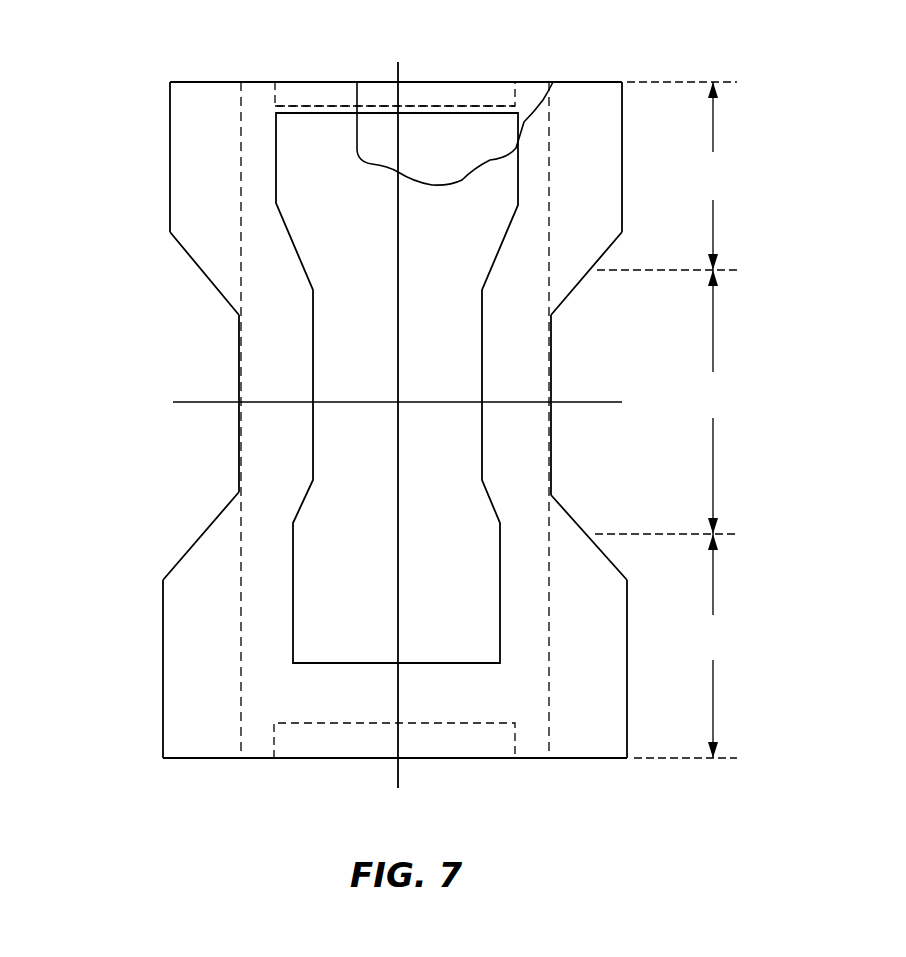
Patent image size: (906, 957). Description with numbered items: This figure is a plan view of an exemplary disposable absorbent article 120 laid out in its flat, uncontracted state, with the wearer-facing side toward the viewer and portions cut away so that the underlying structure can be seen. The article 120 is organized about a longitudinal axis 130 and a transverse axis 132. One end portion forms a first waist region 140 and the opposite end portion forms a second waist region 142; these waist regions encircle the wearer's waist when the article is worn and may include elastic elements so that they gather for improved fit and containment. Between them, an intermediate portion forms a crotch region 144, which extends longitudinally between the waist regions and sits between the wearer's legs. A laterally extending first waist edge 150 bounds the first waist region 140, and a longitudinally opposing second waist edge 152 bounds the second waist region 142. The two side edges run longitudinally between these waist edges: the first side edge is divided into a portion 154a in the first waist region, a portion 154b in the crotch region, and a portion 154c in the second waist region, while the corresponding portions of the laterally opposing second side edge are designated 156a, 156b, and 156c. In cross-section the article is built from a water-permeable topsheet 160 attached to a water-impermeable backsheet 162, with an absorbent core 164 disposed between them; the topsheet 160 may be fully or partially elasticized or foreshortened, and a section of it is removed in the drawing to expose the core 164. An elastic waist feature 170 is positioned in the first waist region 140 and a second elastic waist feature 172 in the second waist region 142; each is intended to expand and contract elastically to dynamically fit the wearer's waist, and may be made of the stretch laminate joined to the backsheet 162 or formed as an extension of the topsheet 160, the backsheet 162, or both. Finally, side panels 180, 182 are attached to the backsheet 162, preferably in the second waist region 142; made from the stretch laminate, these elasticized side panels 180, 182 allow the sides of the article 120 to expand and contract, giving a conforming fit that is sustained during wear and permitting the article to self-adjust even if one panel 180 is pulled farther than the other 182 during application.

The disposable absorbent article 120 is at (132, 146).
The longitudinal axis 130 is at (400, 100).
The transverse axis 132 is at (217, 402).
The first waist region 140 is at (667, 176).
The second waist region 142 is at (685, 646).
The crotch region 144 is at (666, 402).
The first waist edge 150 is at (543, 80).
The second waist edge 152 is at (549, 758).
The first side edge portion in first waist region 154a is at (170, 190).
The first side edge portion in crotch region 154b is at (238, 328).
The first side edge portion in second waist region 154c is at (163, 652).
The second side edge portion in first waist region 156a is at (622, 160).
The second side edge portion in crotch region 156b is at (552, 378).
The second side edge portion in second waist region 156c is at (627, 713).
The topsheet 160 is at (231, 141).
The backsheet 162 is at (483, 104).
The absorbent core 164 is at (463, 154).
The elastic waist feature 170 is at (313, 92).
The elastic waist feature 172 is at (458, 745).
The side panel 180 is at (192, 745).
The side panel 182 is at (607, 743).